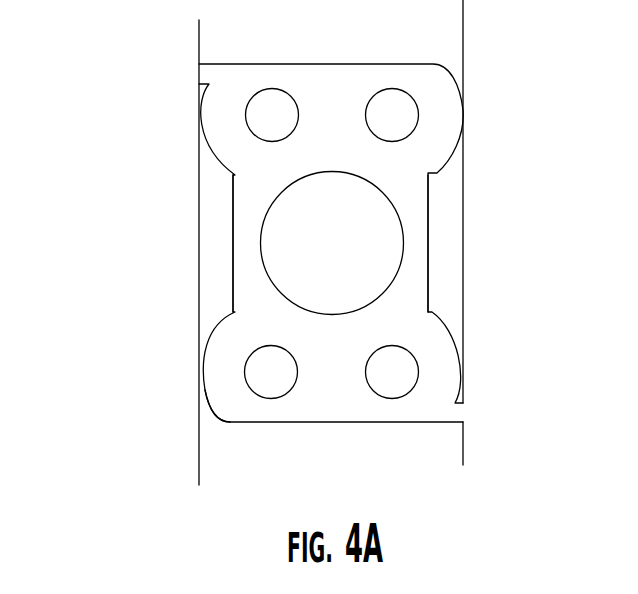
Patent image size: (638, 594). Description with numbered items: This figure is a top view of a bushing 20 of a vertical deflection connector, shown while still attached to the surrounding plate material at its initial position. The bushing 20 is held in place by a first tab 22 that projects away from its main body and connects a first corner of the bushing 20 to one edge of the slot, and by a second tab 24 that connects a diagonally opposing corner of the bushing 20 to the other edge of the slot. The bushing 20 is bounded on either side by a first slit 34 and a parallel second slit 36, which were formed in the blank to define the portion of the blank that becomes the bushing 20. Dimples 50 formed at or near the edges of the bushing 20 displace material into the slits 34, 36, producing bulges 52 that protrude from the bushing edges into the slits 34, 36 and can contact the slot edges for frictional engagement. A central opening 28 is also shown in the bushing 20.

The bushing 20 is at (96, 272).
The first tab 22 is at (205, 73).
The second tab 24 is at (460, 413).
The central aperture 28 is at (262, 286).
The first slit 34 is at (218, 230).
The second slit 36 is at (447, 238).
The dimple 50 is at (280, 103).
The bulge 52 is at (204, 415).